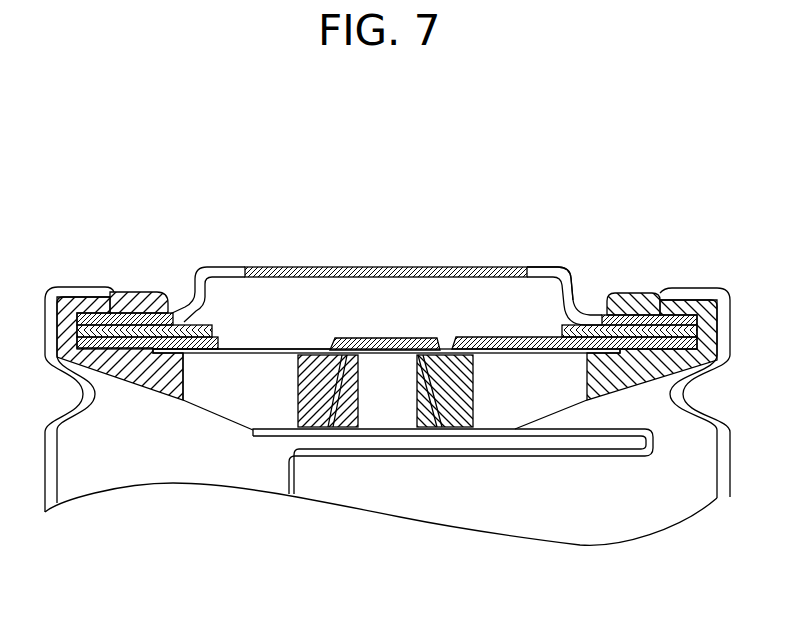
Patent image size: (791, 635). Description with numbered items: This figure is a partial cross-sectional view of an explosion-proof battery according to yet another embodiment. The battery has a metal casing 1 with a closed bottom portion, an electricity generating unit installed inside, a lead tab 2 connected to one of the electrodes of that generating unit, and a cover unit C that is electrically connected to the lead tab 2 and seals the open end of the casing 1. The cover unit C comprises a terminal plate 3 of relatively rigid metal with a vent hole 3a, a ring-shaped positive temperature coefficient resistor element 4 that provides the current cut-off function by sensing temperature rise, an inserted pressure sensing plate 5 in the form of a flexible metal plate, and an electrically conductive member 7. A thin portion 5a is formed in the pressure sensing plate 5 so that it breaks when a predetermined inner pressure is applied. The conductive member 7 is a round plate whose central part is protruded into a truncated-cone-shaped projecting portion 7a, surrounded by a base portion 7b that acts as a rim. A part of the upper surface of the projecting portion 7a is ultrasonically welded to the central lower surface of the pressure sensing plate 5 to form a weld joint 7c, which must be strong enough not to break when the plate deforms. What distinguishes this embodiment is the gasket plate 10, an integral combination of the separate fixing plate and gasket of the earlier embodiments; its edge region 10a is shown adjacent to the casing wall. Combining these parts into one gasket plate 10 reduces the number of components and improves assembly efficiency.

The metal casing 1 is at (77, 283).
The lead tab 2 is at (604, 462).
The terminal plate 3 is at (452, 262).
The vent hole 3a is at (533, 264).
The positive temperature coefficient resistor element 4 is at (639, 320).
The inserted pressure sensing plate 5 is at (362, 336).
The thin portion 5a is at (274, 347).
The electrically conductive member 7 is at (427, 392).
The projecting portion 7a is at (340, 428).
The base portion 7b is at (482, 428).
The weld joint 7c is at (394, 349).
The gasket plate 10 is at (134, 393).
The base edge 10a is at (190, 386).
The cover unit C is at (580, 262).